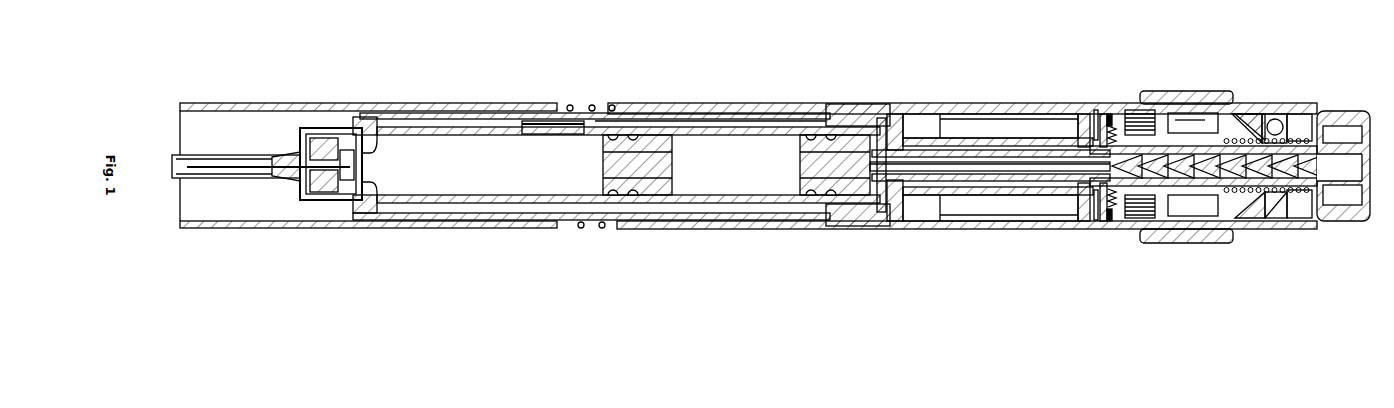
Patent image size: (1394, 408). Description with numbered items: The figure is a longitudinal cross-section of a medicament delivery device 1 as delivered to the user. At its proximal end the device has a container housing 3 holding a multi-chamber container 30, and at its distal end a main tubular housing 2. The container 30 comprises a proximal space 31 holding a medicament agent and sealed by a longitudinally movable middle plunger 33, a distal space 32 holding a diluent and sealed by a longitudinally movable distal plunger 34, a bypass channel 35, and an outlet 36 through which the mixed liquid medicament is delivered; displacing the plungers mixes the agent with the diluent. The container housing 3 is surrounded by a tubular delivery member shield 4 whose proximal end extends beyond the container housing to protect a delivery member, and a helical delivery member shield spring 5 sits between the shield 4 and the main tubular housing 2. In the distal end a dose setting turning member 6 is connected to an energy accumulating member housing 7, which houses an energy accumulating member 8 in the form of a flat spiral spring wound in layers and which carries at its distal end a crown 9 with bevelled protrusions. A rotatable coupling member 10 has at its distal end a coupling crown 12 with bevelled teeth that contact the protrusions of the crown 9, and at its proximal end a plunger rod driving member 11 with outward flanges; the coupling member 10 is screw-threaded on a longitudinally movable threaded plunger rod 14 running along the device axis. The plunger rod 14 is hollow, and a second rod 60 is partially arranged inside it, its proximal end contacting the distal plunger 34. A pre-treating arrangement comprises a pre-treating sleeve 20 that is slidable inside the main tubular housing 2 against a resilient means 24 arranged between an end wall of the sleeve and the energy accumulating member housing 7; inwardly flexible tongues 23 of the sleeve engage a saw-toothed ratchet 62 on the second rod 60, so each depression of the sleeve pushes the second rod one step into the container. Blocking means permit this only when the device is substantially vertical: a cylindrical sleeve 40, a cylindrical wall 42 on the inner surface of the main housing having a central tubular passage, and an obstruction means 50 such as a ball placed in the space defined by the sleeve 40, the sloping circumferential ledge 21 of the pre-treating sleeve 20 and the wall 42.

The delivery device 1 is at (652, 67).
The main tubular housing 2 is at (1038, 103).
The container housing 3 is at (772, 218).
The delivery member shield 4 is at (557, 104).
The delivery member shield spring 5 is at (581, 229).
The dose setting turning member 6 is at (1193, 96).
The energy accumulating member housing 7 is at (1185, 218).
The energy accumulating member 8 is at (1140, 218).
The crown 9 is at (1112, 208).
The rotatable coupling member 10 is at (1007, 192).
The plunger rod driving member 11 is at (898, 205).
The coupling crown 12 is at (1093, 205).
The threaded plunger rod 14 is at (982, 150).
The pre-treating sleeve 20 is at (1290, 197).
The circumferential ledge 21 is at (1262, 210).
The inwardly flexible tongues 23 is at (1108, 116).
The resilient means 24 is at (1300, 137).
The container 30 is at (523, 202).
The proximal space 31 is at (487, 175).
The distal space 32 is at (728, 172).
The middle plunger 33 is at (630, 172).
The distal plunger 34 is at (829, 165).
The bypass channel 35 is at (545, 121).
The outlet 36 is at (325, 152).
The cylindrical sleeve 40 is at (205, 165).
The cylindrical wall 42 is at (1253, 200).
The obstruction means 50 is at (1273, 118).
The second rod 60 is at (980, 170).
The ratchet 62 is at (1322, 178).